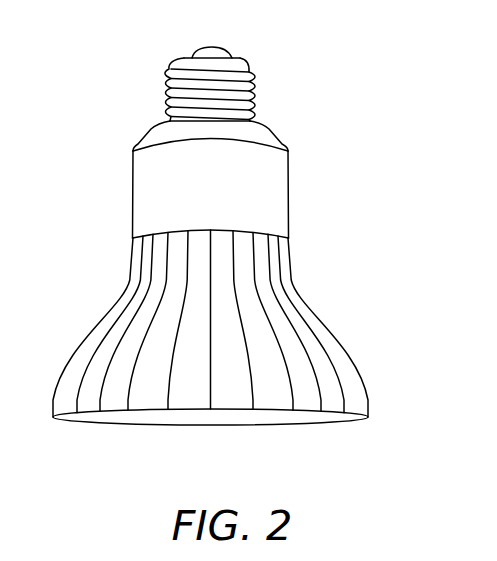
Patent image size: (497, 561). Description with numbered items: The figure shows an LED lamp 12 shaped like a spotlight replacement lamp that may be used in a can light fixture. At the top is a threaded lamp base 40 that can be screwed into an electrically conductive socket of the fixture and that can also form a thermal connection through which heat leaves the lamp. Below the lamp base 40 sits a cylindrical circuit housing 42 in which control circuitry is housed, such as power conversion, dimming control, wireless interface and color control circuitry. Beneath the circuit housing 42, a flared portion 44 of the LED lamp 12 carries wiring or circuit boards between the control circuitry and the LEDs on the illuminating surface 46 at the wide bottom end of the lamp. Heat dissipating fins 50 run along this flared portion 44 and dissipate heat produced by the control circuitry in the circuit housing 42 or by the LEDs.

The LED lamp 12 is at (318, 85).
The lamp base 40 is at (167, 93).
The circuit housing 42 is at (133, 197).
The portion of the LED lamp 44 is at (128, 272).
The illuminating surface 46 is at (223, 416).
The heat dissipating fin 50 is at (123, 311).